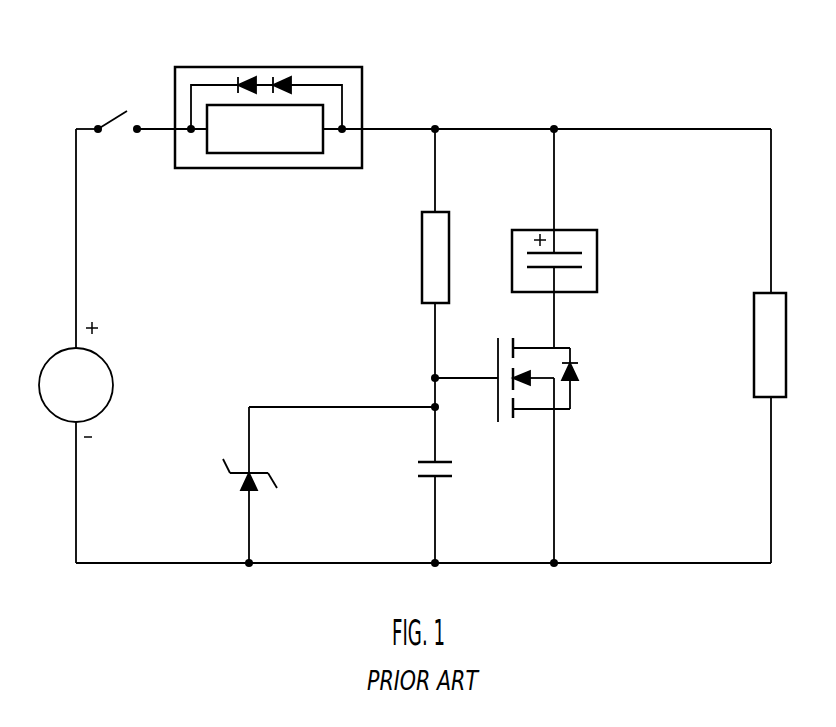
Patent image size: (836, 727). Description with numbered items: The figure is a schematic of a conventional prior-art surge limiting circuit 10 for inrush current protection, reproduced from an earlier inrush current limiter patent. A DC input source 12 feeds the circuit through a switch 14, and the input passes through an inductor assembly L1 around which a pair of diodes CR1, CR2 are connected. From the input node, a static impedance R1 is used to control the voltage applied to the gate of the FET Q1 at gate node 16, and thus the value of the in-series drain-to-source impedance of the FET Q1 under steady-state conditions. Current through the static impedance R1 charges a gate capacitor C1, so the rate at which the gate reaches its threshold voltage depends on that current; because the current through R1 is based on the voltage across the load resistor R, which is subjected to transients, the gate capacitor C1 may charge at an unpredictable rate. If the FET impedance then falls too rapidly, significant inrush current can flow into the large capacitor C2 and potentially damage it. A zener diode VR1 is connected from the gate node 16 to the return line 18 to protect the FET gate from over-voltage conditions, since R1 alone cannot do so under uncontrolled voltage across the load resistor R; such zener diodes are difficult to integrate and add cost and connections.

The prior art power supply circuit 10 is at (583, 115).
The DC input voltage source 12 is at (112, 379).
The input switch 14 is at (117, 112).
The gate node of transistor Q1 16 is at (463, 380).
The return line (RTN) 18 is at (423, 546).
The inductor assembly with clamp diodes L1 is at (268, 132).
The clamp diode CR1 is at (243, 78).
The clamp diode CR2 is at (288, 78).
The static impedance R1 is at (427, 257).
The gate capacitor C1 is at (387, 471).
The capacitor C2 is at (591, 263).
The FET Q1 is at (534, 365).
The zener voltage reference diode VR1 is at (240, 483).
The load resistor R is at (779, 345).